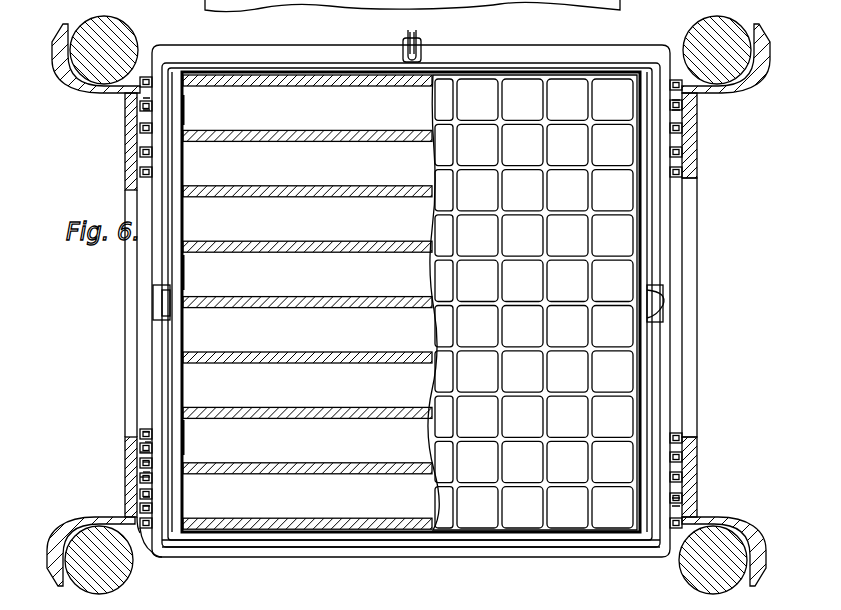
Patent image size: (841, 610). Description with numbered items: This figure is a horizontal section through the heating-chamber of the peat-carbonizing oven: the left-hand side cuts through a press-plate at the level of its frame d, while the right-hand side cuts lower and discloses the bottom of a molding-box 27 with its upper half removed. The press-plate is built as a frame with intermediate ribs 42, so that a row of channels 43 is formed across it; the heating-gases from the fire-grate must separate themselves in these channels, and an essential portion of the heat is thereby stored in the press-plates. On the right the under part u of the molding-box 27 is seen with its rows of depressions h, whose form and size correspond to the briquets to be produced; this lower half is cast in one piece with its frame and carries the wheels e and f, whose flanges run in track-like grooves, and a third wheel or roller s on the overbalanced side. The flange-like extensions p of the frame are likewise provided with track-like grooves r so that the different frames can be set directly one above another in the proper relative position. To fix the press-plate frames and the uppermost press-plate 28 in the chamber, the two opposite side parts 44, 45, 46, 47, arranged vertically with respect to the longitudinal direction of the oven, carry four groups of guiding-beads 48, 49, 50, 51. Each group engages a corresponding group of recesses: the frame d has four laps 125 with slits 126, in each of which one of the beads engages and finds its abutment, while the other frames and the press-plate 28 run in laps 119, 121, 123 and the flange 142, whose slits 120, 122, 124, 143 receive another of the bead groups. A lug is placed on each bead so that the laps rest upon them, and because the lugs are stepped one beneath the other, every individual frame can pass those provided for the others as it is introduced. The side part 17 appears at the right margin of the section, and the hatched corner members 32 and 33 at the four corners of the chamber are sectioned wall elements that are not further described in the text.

The side bar 17 is at (693, 192).
The molding-box 27 is at (497, 537).
The uppermost press-plate 28 is at (333, 508).
The left cushion roll 32 is at (133, 31).
The right cushion roll 33 is at (693, 30).
The intermediate ribs 42 is at (358, 186).
The channels 43 is at (256, 274).
The side part of heating-chamber 44 is at (137, 128).
The side part of heating-chamber 45 is at (137, 490).
The side part of heating-chamber 46 is at (690, 462).
The side part of heating-chamber 47 is at (695, 128).
The guiding-beads 48 is at (141, 78).
The guiding-beads 49 is at (139, 443).
The guiding-beads 50 is at (687, 440).
The guiding-beads 51 is at (681, 107).
The lap 119 is at (147, 432).
The slit 120 is at (152, 442).
The lap 121 is at (147, 462).
The slit 122 is at (138, 452).
The lap 123 is at (150, 472).
The slit 124 is at (138, 477).
The laps 125 is at (149, 110).
The slits 126 is at (145, 100).
The flange 142 is at (158, 545).
The slit 143 is at (136, 534).
The press-plate frame d is at (308, 52).
The third wheel or roller s is at (417, 34).
The under part of molding-box u is at (520, 72).
The depressions h is at (534, 303).
The flange-like extensions p is at (163, 199).
The track-like grooves r is at (165, 243).
The wheel e is at (157, 298).
The wheel f is at (667, 307).